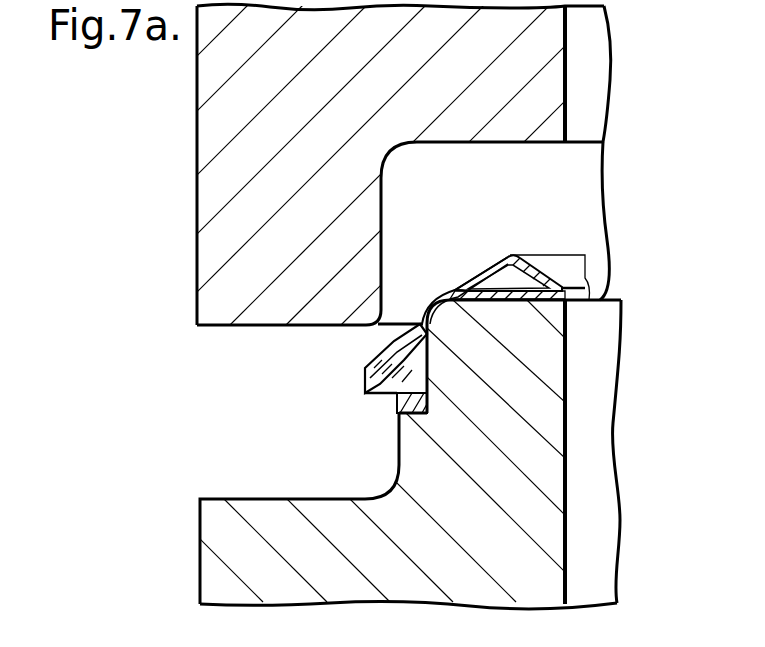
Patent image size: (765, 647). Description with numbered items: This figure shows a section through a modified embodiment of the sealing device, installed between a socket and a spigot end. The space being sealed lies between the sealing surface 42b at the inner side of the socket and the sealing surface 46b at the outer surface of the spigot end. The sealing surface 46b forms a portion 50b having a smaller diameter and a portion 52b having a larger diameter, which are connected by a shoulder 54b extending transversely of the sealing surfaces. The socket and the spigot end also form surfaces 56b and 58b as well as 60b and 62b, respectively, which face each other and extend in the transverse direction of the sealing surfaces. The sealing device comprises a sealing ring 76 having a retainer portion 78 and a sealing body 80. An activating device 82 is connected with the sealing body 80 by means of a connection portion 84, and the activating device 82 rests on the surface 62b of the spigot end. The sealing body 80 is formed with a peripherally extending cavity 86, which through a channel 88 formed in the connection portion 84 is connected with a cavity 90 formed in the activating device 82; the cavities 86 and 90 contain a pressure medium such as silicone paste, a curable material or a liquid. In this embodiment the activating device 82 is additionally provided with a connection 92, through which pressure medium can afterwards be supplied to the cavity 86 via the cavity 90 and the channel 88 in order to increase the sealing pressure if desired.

The sealing surface 42b is at (382, 222).
The sealing surface 46b is at (427, 410).
The portion having a smaller diameter 50b is at (427, 363).
The portion having a larger diameter 52b is at (399, 452).
The shoulder 54b is at (381, 436).
The surface 56b is at (252, 327).
The surface 58b is at (258, 499).
The surface 60b is at (500, 143).
The surface 62b is at (598, 292).
The sealing ring 76 is at (358, 391).
The retainer portion 78 is at (398, 397).
The sealing body 80 is at (365, 370).
The activating device 82 is at (490, 272).
The connection portion 84 is at (434, 307).
The cavity 86 is at (390, 341).
The channel 88 is at (462, 291).
The cavity 90 is at (518, 272).
The connection 92 is at (590, 256).